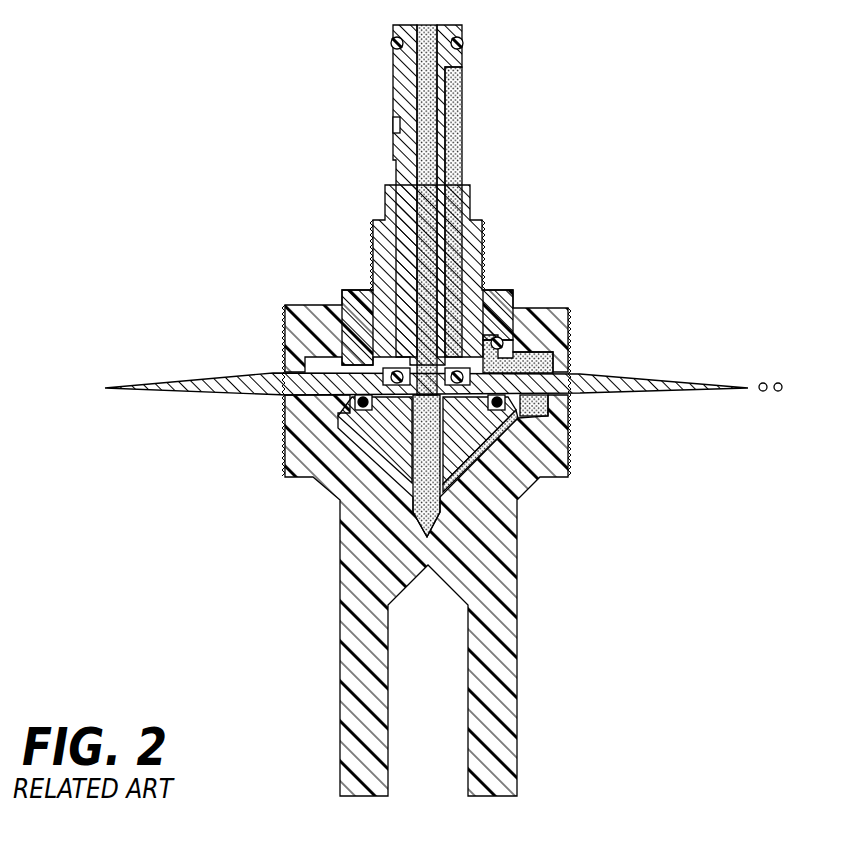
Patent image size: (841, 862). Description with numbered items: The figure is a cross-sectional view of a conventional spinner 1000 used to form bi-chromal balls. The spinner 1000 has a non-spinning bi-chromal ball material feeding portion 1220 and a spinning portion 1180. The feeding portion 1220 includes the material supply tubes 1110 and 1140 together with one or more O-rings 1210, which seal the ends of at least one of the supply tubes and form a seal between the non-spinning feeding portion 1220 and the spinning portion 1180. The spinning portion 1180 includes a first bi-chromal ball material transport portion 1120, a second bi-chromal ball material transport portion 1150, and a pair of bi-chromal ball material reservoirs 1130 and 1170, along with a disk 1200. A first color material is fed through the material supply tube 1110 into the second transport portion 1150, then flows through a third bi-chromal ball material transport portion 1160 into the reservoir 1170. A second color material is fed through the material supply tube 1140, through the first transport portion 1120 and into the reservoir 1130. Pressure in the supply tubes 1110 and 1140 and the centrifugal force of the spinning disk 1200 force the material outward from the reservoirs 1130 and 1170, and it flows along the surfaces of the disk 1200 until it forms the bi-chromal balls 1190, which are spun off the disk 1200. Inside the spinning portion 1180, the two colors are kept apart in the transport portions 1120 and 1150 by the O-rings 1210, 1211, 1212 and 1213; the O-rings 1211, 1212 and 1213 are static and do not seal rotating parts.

The spinner 1000 is at (172, 88).
The material supply tube 1110 is at (427, 68).
The first bi-chromal ball material transport portion 1120 is at (452, 305).
The bi-chromal ball material reservoir 1130 is at (535, 363).
The material supply tube 1140 is at (457, 100).
The second bi-chromal ball material transport portion 1150 is at (417, 512).
The third bi-chromal ball material transport portion 1160 is at (518, 523).
The bi-chromal ball material reservoir 1170 is at (547, 415).
The spinning portion 1180 is at (523, 470).
The bi-chromal balls 1190 is at (762, 382).
The disk 1200 is at (215, 382).
The O-rings 1210 is at (401, 374).
The O-ring 1211 is at (499, 340).
The O-ring 1212 is at (465, 41).
The O-ring 1213 is at (355, 401).
The bi-chromal ball material feeding portion 1220 is at (403, 147).